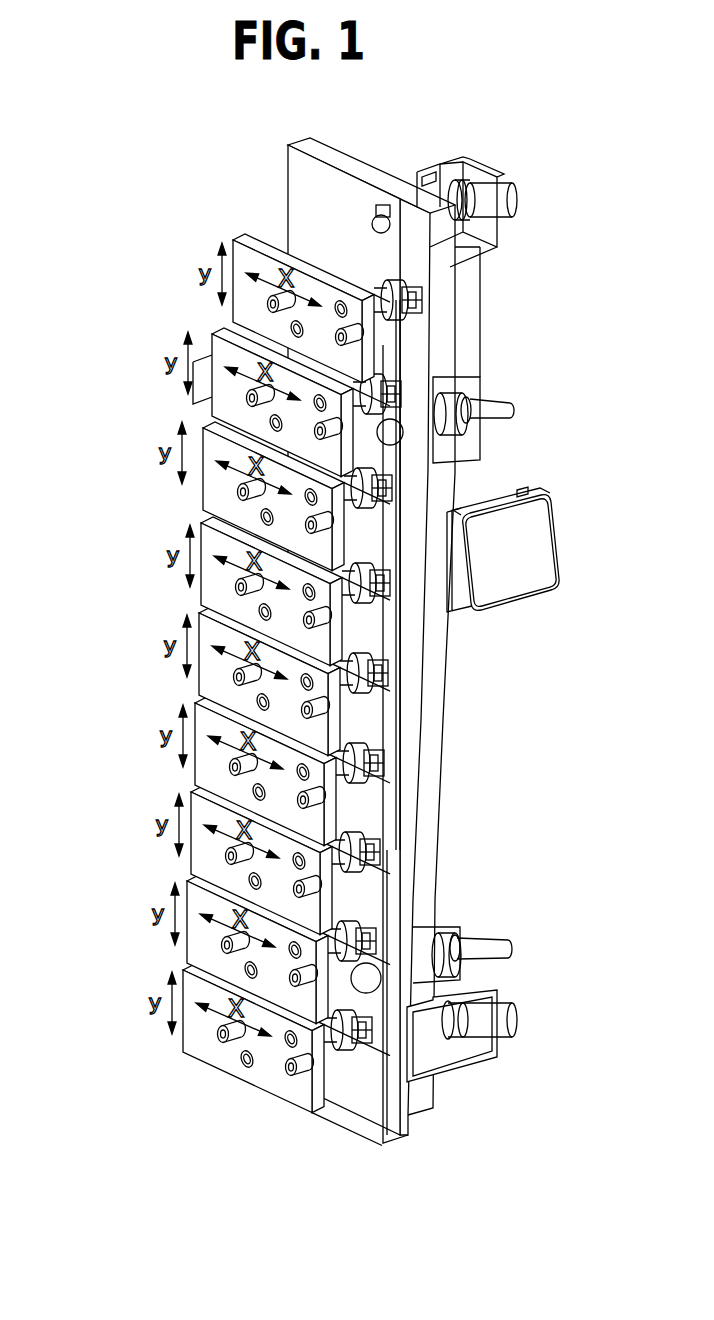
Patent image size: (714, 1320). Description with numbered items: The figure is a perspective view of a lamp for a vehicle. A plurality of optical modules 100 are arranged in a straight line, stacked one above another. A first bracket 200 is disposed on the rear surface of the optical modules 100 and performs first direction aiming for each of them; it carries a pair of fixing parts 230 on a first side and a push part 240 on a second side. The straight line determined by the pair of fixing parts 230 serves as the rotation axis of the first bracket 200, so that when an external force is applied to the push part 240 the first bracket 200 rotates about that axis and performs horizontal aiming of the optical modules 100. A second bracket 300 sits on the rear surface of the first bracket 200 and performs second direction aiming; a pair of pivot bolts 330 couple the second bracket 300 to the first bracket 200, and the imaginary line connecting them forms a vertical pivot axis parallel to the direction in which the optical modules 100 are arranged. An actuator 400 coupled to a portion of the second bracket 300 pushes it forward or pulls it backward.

The optical modules 100 is at (248, 252).
The first bracket 200 is at (328, 1143).
The fixing parts 230 is at (497, 403).
The push part 240 is at (198, 398).
The second bracket 300 is at (428, 1124).
The pivot bolts 330 is at (512, 195).
The actuator 400 is at (528, 477).